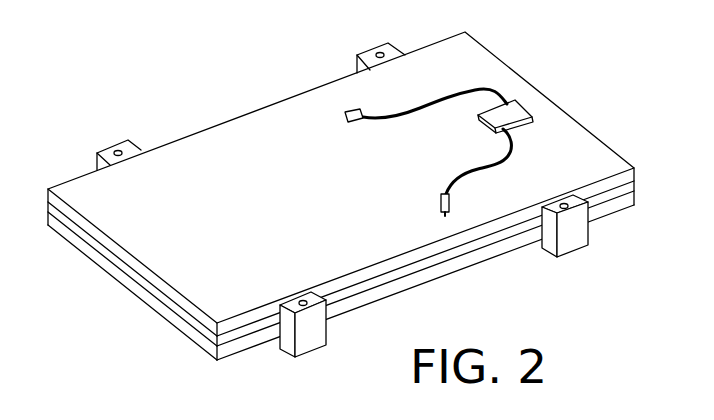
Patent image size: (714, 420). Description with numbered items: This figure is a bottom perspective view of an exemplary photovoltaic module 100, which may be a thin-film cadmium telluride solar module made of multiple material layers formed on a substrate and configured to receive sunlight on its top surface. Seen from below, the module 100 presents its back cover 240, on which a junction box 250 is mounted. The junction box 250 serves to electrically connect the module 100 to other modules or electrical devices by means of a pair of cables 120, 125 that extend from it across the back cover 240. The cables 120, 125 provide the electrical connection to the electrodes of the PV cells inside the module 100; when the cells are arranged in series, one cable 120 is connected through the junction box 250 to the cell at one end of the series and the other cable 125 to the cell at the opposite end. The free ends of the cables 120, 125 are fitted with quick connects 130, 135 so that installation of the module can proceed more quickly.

The photovoltaic module 100 is at (146, 64).
The cable 120 is at (430, 114).
The cable 125 is at (482, 165).
The quick connect 130 is at (350, 122).
The quick connect 135 is at (442, 198).
The back cover 240 is at (190, 245).
The junction box 250 is at (520, 114).